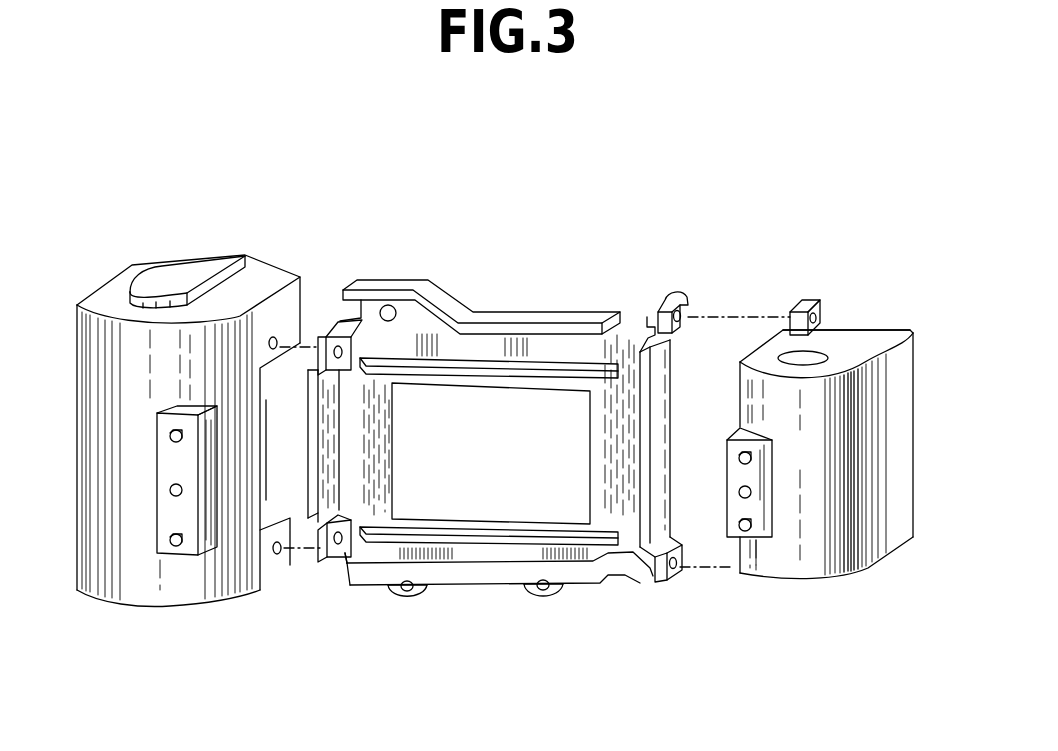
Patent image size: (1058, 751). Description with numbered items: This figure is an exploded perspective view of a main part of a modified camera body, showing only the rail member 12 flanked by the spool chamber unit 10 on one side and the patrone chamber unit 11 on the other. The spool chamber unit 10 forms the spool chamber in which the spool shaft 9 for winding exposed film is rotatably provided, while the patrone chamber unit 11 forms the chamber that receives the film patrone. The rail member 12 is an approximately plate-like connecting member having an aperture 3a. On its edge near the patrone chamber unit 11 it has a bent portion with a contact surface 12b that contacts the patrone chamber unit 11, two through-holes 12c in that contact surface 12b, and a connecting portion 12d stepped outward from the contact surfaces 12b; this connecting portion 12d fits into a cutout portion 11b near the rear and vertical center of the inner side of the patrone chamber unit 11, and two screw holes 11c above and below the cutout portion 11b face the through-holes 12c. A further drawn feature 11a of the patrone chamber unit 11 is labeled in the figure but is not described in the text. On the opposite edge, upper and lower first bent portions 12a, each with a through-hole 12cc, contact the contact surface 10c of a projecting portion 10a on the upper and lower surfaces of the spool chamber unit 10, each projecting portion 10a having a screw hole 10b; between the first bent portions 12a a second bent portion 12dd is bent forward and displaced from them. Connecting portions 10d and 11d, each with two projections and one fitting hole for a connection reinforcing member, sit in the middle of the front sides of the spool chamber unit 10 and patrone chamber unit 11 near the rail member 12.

The aperture 3a is at (518, 487).
The spool shaft 9 is at (832, 340).
The spool chamber unit 10 is at (870, 337).
The projecting portion 10a is at (802, 298).
The screw hole 10b is at (812, 357).
The contact surface 10c is at (792, 291).
The connecting portion 10d is at (765, 515).
The patrone chamber unit 11 is at (192, 255).
The side face 11a is at (291, 307).
The cutout portion 11b is at (277, 480).
The screw hole 11c is at (272, 337).
The connecting portion 11d is at (173, 497).
The rail member 12 is at (560, 317).
The first bent portion 12a is at (687, 300).
The contact surface 12b is at (326, 332).
The through-hole 12c is at (343, 350).
The through-hole 12cc is at (660, 296).
The connecting portion 12d is at (320, 440).
The second bent portion 12dd is at (657, 485).